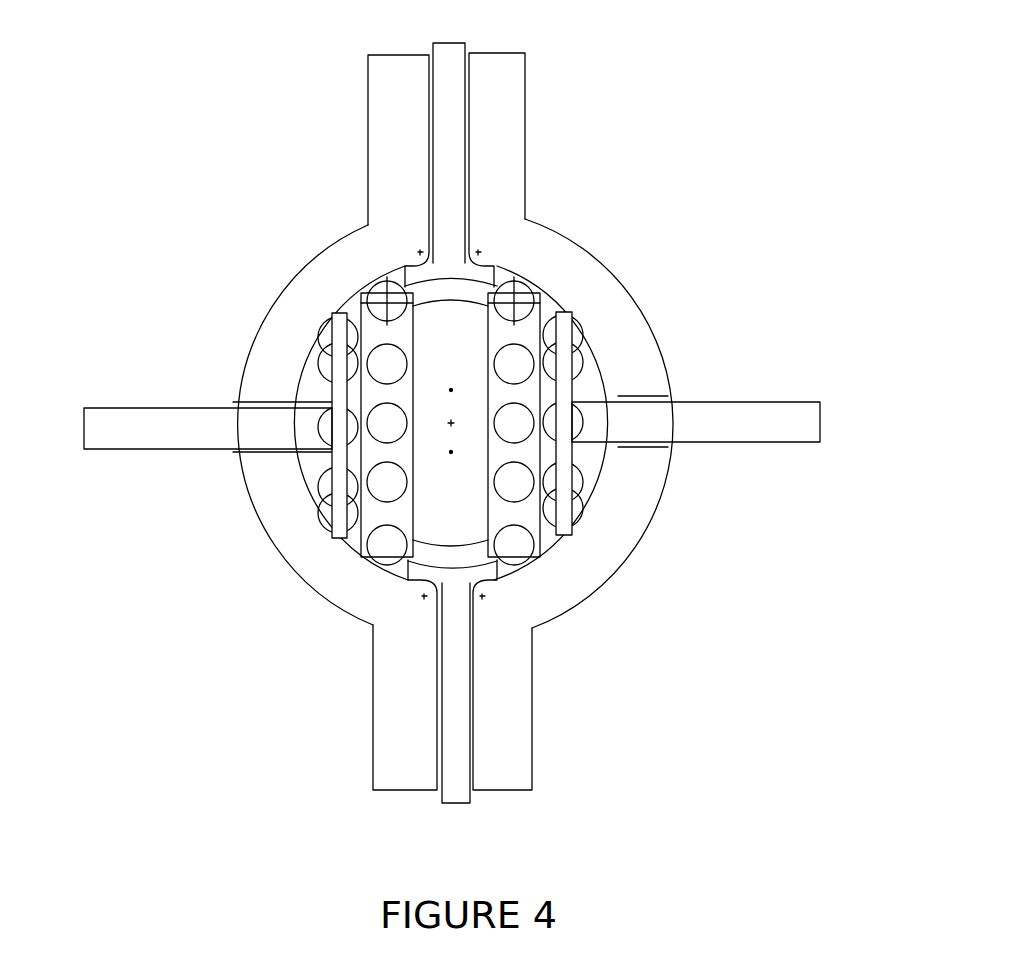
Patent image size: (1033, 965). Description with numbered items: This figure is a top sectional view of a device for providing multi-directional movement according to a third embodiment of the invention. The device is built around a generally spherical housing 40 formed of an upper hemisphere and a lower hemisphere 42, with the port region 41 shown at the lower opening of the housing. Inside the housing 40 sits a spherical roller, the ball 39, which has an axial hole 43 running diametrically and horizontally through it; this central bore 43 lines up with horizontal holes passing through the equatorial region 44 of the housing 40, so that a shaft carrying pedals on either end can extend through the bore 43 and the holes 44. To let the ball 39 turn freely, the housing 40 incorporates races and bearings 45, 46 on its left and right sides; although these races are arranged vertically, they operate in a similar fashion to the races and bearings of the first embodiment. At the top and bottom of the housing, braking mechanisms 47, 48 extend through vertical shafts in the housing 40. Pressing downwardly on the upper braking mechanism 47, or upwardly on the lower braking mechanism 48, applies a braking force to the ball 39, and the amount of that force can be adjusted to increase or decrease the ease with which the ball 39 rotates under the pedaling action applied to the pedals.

The ball 39 is at (445, 366).
The housing 40 is at (625, 600).
The outlet port 41 is at (364, 718).
The lower hemisphere 42 is at (343, 600).
The axial hole 43 is at (300, 451).
The equatorial region 44 is at (684, 393).
The races and bearings 45 is at (588, 486).
The races and bearings 46 is at (555, 290).
The braking mechanism 47 is at (457, 251).
The braking mechanism 48 is at (464, 593).